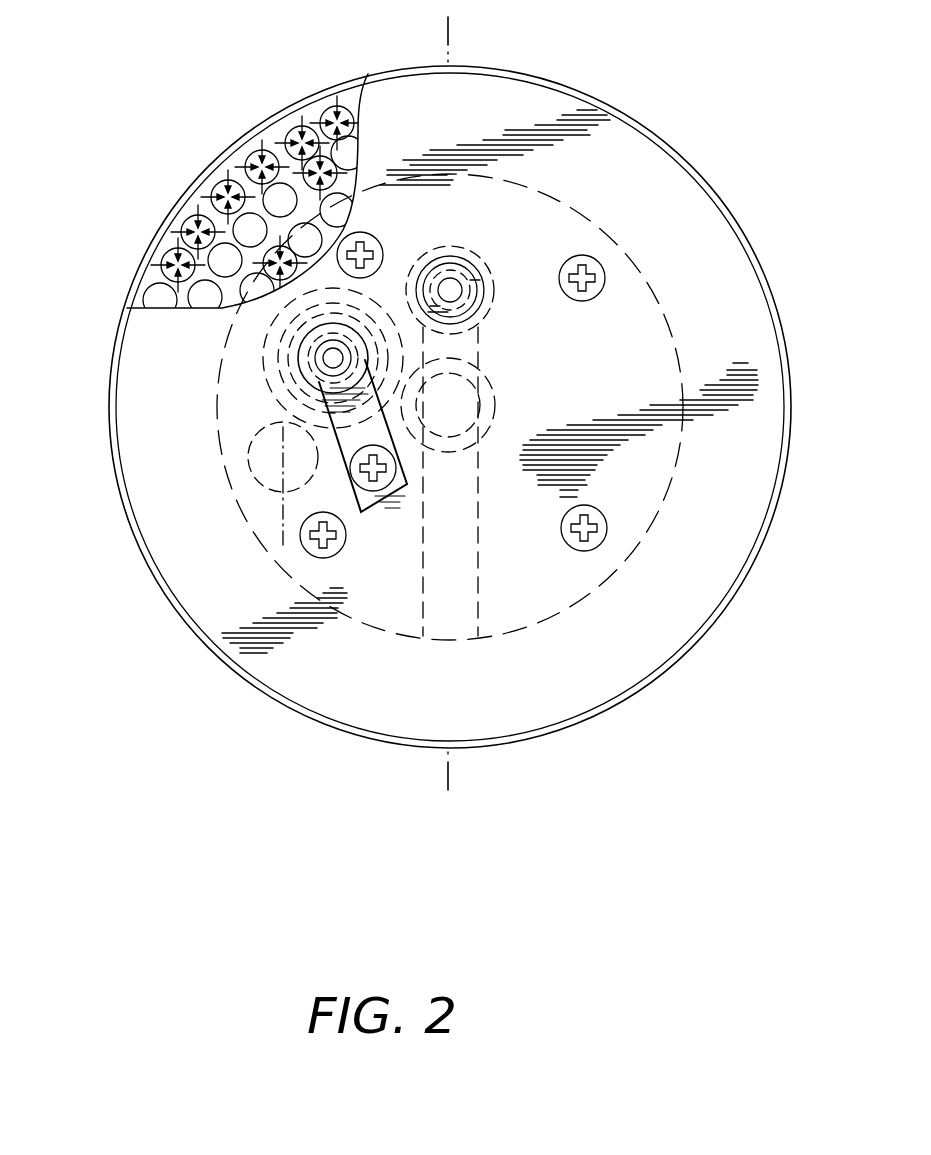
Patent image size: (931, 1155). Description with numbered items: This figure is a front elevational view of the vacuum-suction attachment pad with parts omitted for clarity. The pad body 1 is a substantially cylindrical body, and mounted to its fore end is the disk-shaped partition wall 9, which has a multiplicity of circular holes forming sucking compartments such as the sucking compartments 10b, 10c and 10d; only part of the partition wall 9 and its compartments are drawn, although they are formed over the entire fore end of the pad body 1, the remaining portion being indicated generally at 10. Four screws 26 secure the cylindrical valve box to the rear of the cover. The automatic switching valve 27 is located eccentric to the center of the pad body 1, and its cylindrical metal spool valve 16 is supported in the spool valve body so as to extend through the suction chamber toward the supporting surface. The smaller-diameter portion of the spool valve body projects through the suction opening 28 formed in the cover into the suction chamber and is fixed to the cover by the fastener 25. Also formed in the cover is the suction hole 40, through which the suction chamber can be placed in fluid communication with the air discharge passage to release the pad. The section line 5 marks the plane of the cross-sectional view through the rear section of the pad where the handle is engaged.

The pad body 1 is at (210, 83).
The section line 5 is at (436, 31).
The partition wall 9 is at (208, 222).
The housing 10 is at (373, 717).
The sucking compartment 10b is at (288, 246).
The sucking compartment 10c is at (255, 160).
The sucking compartment 10d is at (215, 195).
The spool valve 16 is at (323, 358).
The automatic switching valve 27 is at (197, 384).
The fastener 25 is at (403, 497).
The screws 26 is at (375, 240).
The suction opening 28 is at (290, 392).
The suction hole 40 is at (455, 285).